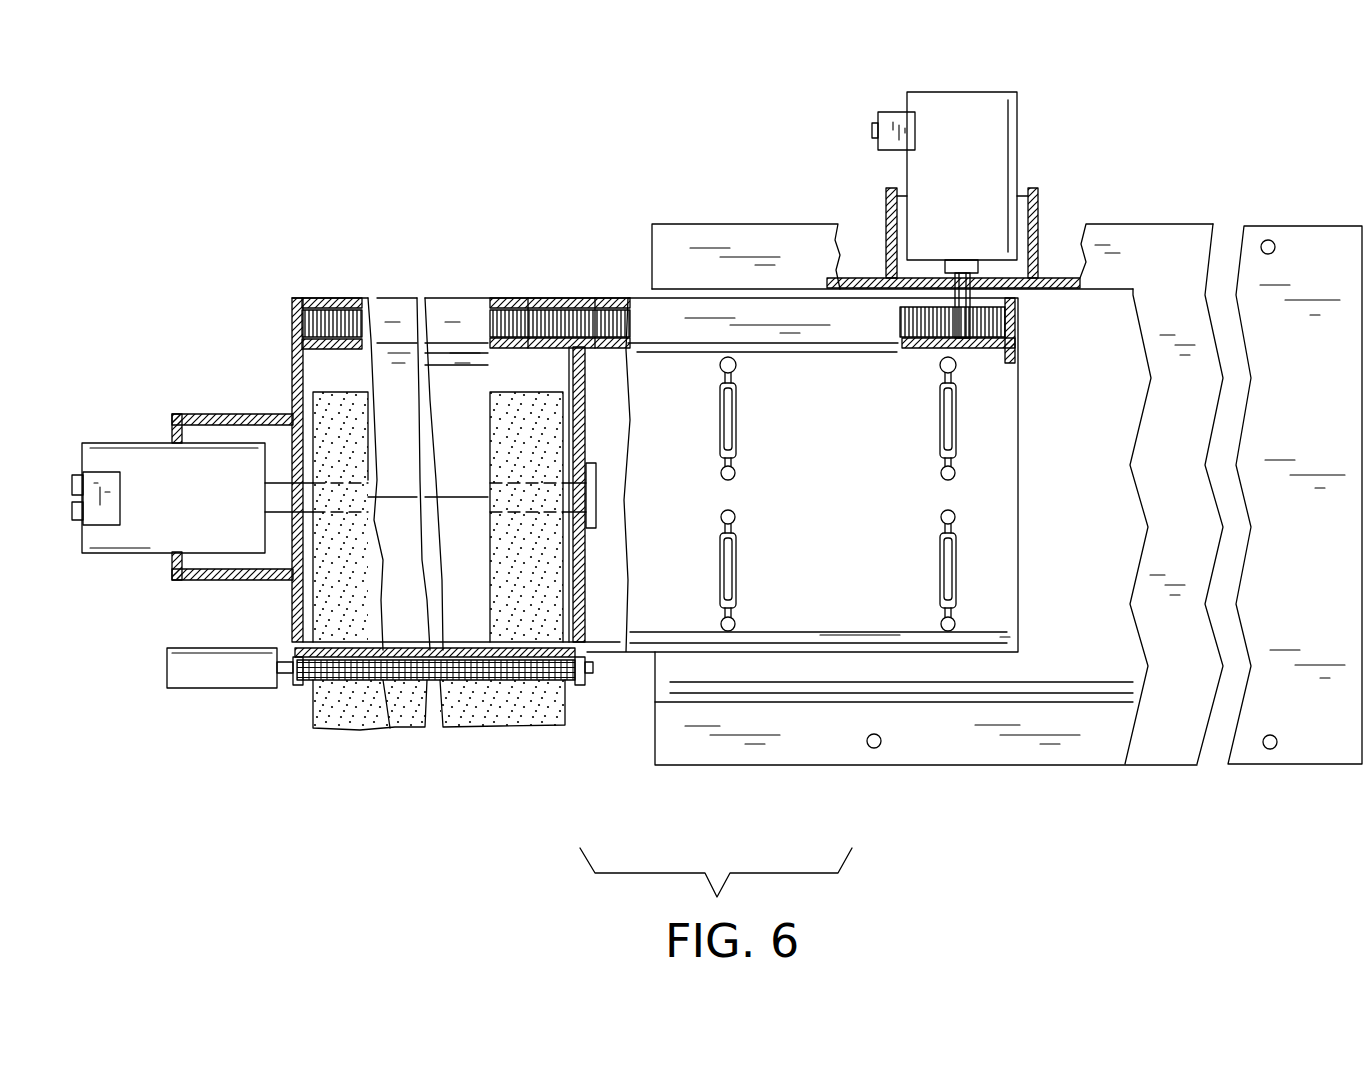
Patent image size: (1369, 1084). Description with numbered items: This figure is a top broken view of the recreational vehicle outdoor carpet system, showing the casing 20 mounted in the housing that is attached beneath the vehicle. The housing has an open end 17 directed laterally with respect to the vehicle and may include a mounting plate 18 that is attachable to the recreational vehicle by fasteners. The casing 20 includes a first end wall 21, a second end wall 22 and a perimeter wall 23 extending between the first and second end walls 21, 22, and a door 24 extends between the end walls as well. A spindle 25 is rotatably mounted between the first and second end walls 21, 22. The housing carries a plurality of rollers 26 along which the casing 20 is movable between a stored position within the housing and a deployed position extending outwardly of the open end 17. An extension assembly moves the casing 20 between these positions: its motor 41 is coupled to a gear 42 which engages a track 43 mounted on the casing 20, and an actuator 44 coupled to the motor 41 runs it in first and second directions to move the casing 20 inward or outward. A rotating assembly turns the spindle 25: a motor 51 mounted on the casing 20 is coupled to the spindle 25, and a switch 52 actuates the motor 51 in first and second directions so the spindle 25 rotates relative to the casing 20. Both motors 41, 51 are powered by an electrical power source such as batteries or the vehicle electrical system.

The open end 17 is at (653, 672).
The mounting plate 18 is at (1321, 226).
The casing 20 is at (693, 397).
The first end wall 21 is at (291, 370).
The second end wall 22 is at (583, 390).
The perimeter wall 23 is at (525, 340).
The door 24 is at (413, 600).
The spindle 25 is at (247, 580).
The rollers 26 is at (937, 588).
The motor 41 is at (942, 92).
The gear 42 is at (900, 320).
The track 43 is at (1007, 323).
The actuator 44 is at (872, 128).
The motor 51 is at (118, 440).
The switch 52 is at (100, 517).